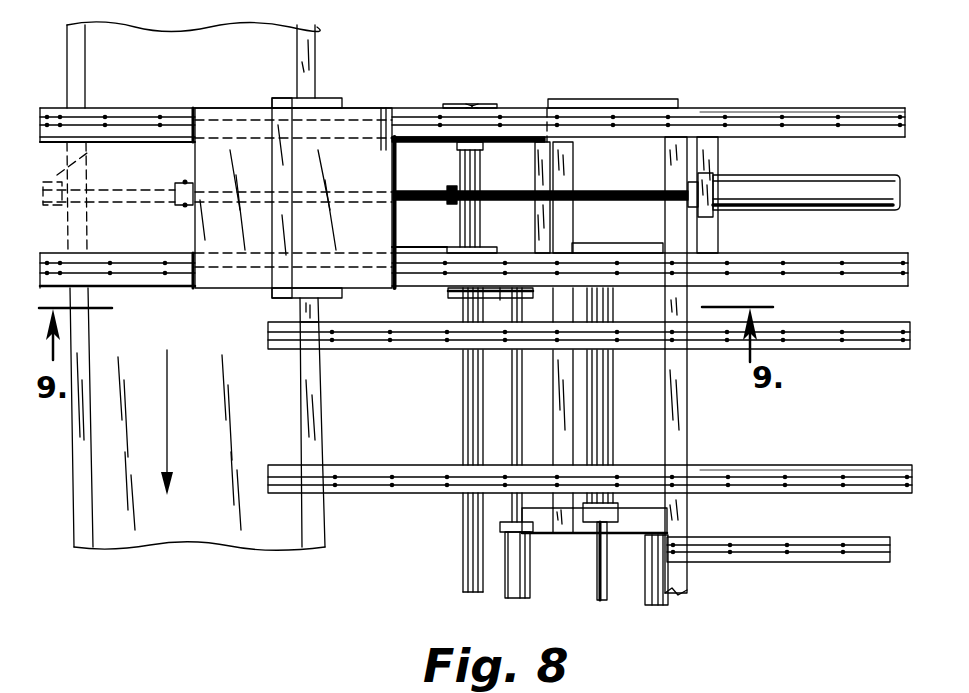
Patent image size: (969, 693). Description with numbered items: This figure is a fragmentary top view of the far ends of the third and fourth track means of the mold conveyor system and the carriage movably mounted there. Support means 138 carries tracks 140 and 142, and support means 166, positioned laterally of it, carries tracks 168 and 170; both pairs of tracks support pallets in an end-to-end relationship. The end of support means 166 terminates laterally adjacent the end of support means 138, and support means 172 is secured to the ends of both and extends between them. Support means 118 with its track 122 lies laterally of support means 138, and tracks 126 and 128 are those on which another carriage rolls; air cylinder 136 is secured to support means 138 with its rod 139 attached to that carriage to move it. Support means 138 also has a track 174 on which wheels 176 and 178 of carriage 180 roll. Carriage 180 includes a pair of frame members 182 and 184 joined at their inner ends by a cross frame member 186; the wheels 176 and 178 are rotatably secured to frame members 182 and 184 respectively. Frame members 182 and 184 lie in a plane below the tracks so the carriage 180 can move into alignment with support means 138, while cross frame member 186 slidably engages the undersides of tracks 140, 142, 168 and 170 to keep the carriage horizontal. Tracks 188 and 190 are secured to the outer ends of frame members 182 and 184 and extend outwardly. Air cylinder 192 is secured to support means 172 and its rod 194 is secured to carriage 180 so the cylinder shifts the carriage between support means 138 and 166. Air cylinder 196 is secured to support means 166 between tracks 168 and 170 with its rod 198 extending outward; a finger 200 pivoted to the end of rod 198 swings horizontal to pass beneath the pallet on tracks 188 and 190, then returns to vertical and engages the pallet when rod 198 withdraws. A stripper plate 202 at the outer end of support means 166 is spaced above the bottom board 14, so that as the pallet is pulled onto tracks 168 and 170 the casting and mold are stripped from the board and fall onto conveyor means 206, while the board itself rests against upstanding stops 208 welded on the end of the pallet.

The bottom board 14 is at (393, 140).
The support means 118 is at (790, 570).
The track 122 is at (828, 550).
The track 126 is at (668, 600).
The track 128 is at (473, 557).
The air cylinder 136 is at (607, 408).
The support means 138 is at (594, 449).
The rod 139 is at (605, 583).
The track 140 is at (833, 465).
The track 142 is at (858, 337).
The support means 166 is at (550, 92).
The track 168 is at (820, 267).
The track 170 is at (822, 120).
The support means 172 is at (549, 548).
The track 174 is at (472, 365).
The wheel 176 is at (490, 214).
The wheel 178 is at (492, 194).
The carriage 180 is at (432, 296).
The frame member 182 is at (418, 250).
The frame member 184 is at (430, 142).
The cross frame member 186 is at (548, 165).
The track 188 is at (157, 273).
The track 190 is at (165, 125).
The air cylinder 192 is at (517, 582).
The rod 194 is at (520, 410).
The air cylinder 196 is at (840, 177).
The rod 198 is at (612, 190).
The finger 200 is at (86, 154).
The stripper plate 202 is at (283, 117).
The conveyor means 206 is at (325, 533).
The stops 208 is at (192, 151).